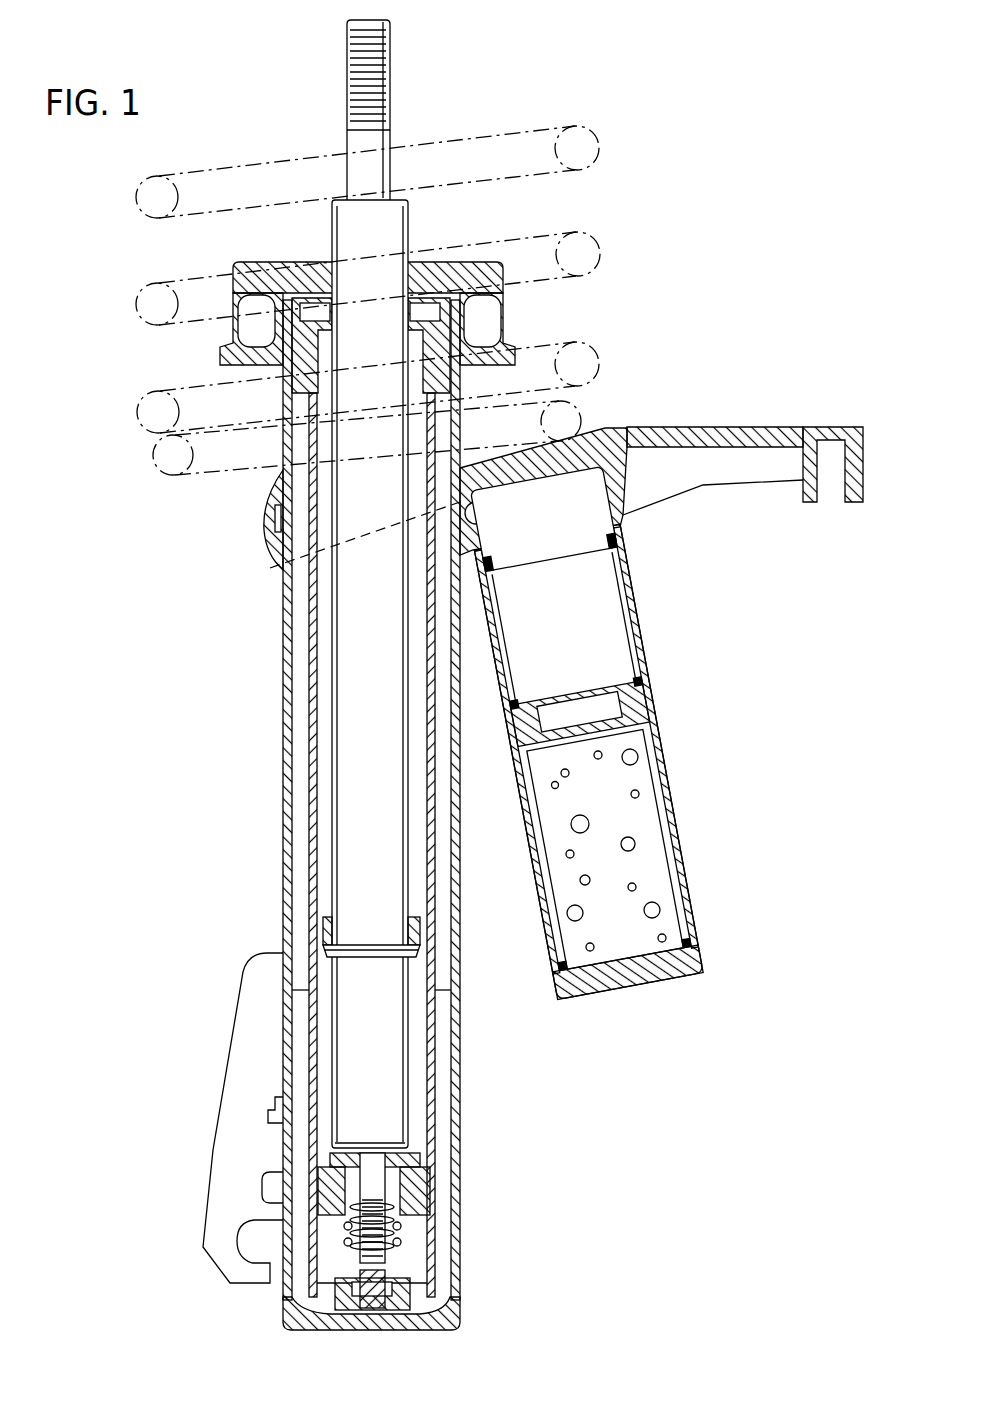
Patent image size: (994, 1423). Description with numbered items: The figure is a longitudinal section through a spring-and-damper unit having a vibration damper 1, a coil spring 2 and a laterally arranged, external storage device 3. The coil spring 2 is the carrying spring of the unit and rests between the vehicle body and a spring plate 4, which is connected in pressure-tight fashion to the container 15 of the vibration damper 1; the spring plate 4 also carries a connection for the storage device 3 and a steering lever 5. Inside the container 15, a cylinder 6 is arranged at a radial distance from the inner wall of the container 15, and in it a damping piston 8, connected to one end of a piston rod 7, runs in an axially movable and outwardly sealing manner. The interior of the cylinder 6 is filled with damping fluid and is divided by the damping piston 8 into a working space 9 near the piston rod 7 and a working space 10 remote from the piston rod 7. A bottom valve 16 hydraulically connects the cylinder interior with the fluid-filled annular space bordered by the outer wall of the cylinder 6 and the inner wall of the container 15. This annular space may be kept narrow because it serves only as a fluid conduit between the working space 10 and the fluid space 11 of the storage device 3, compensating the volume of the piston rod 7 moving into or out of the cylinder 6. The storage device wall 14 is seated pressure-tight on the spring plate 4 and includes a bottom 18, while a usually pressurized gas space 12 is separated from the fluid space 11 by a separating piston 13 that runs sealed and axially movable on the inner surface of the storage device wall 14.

The vibration damper 1 is at (262, 615).
The coil spring 2 is at (586, 256).
The storage device 3 is at (684, 752).
The spring plate 4 is at (187, 488).
The steering lever 5 is at (808, 423).
The cylinder 6 is at (310, 650).
The piston rod 7 is at (355, 710).
The damping piston 8 is at (432, 1175).
The working space near the piston rod 9 is at (300, 866).
The working space remote from the piston rod 10 is at (418, 1253).
The fluid space 11 is at (605, 604).
The gas space 12 is at (650, 882).
The separating piston 13 is at (652, 694).
The storage device wall 14 is at (648, 655).
The container 15 is at (290, 746).
The bottom valve 16 is at (430, 1303).
The bottom 18 is at (690, 978).